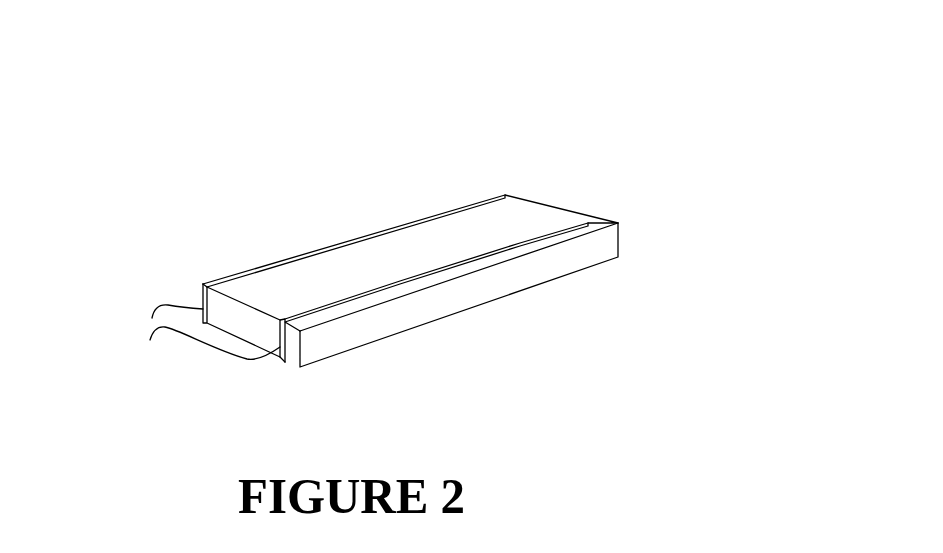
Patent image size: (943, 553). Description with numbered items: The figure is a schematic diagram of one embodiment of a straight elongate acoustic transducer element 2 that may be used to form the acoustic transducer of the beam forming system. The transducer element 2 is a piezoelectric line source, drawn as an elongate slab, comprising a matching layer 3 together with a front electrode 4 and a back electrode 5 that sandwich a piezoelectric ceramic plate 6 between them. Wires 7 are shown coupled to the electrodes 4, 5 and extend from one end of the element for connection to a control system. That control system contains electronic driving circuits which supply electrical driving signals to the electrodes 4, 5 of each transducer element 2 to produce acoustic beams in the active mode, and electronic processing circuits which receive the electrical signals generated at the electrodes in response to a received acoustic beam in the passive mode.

The straight elongate acoustic transducer element 2 is at (418, 194).
The matching layer 3 is at (580, 232).
The front electrode 4 is at (242, 268).
The back electrode 5 is at (305, 305).
The piezoelectric ceramic plate 6 is at (410, 243).
The wires 7 is at (140, 337).